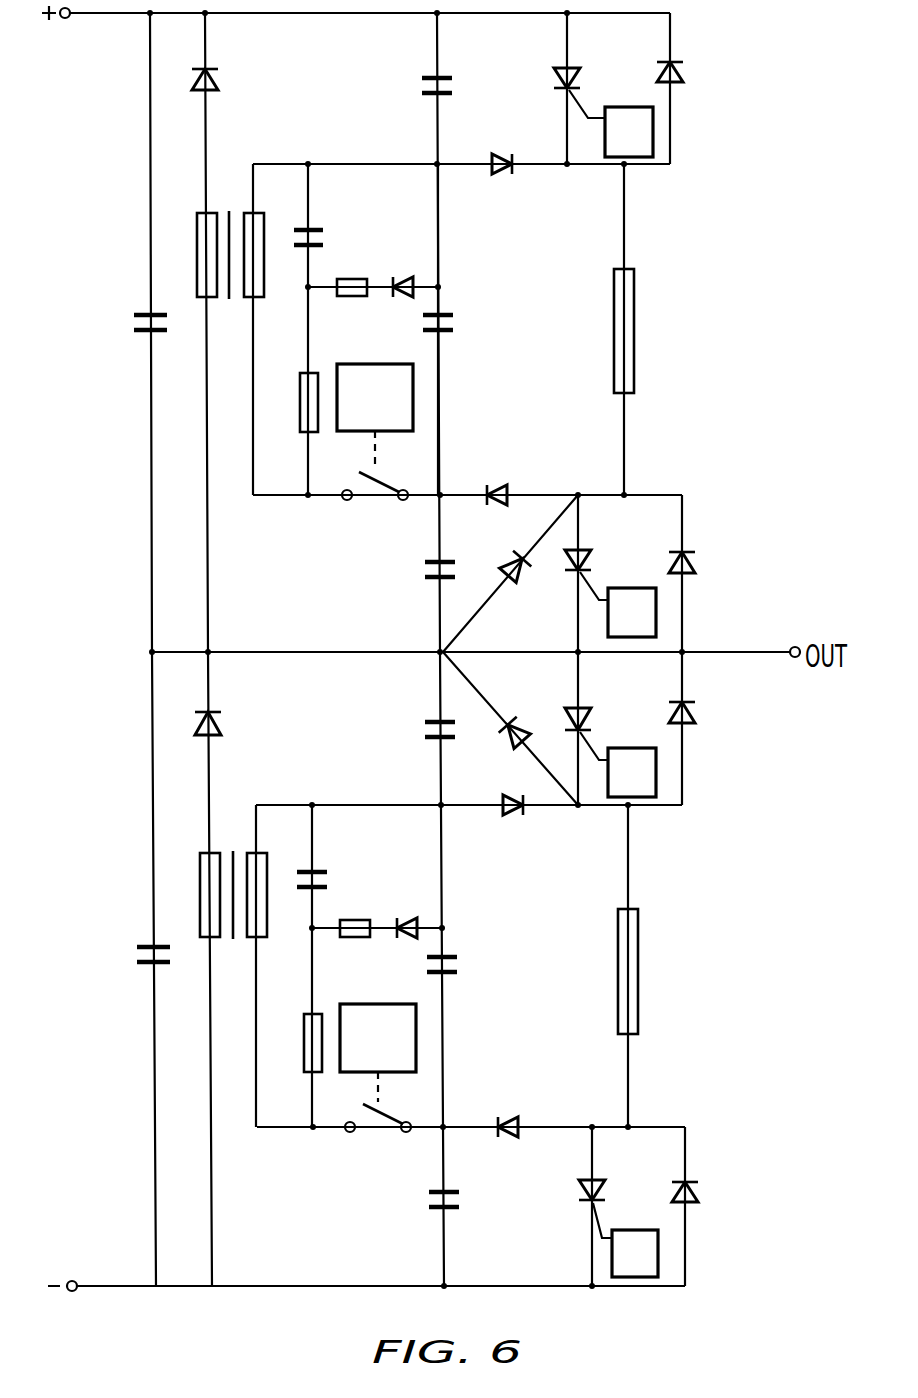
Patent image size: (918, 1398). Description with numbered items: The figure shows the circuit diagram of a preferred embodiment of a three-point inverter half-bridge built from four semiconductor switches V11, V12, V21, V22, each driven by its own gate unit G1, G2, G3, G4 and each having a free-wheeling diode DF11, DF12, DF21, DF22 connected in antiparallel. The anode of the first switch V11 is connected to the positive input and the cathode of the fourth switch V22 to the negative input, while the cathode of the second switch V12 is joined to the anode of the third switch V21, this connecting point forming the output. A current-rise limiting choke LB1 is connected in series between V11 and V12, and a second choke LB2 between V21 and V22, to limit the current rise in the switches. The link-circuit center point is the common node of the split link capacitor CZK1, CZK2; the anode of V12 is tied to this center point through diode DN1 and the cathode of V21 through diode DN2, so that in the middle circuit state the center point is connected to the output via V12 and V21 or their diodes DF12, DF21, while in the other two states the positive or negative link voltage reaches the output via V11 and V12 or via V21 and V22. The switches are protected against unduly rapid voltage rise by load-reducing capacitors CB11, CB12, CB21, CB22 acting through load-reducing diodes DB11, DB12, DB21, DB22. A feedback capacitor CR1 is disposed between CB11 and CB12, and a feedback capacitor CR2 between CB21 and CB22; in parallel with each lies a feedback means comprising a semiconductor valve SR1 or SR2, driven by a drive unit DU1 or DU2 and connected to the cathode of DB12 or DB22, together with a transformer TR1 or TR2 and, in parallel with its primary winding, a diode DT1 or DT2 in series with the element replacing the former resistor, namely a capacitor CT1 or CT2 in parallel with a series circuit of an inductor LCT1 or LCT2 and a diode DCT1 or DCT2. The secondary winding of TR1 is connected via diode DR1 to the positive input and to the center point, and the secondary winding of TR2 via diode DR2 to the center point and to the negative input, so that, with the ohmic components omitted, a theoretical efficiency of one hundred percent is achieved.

The diode DR1 is at (232, 88).
The diode DR2 is at (231, 725).
The split link capacitor CZK1 is at (122, 327).
The split link capacitor CZK2 is at (123, 966).
The transformer TR1 is at (212, 257).
The transformer TR2 is at (215, 895).
The capacitor CT1 is at (297, 265).
The capacitor CT2 is at (299, 891).
The inductor LCT1 is at (366, 312).
The inductor LCT2 is at (355, 953).
The diode DCT1 is at (395, 268).
The diode DCT2 is at (395, 909).
The feedback capacitor CR1 is at (465, 327).
The feedback capacitor CR2 is at (465, 967).
The load-reducing capacitor CB11 is at (403, 70).
The load-reducing capacitor CB12 is at (407, 571).
The load-reducing capacitor CB21 is at (408, 729).
The load-reducing capacitor CB22 is at (410, 1199).
The load-reducing diode DB11 is at (512, 188).
The load-reducing diode DB12 is at (497, 475).
The load-reducing diode DB21 is at (526, 826).
The load-reducing diode DB22 is at (507, 1107).
The diode DT1 is at (291, 410).
The diode DT2 is at (293, 1052).
The drive unit DU1 is at (375, 417).
The drive unit DU2 is at (378, 1053).
The semiconductor valve SR1 is at (375, 509).
The semiconductor valve SR2 is at (378, 1141).
The first semiconductor switch V11 is at (589, 73).
The second semiconductor switch V12 is at (605, 559).
The third semiconductor switch V21 is at (602, 715).
The fourth semiconductor switch V22 is at (616, 1186).
The gate unit G1 is at (629, 132).
The gate unit G2 is at (632, 612).
The gate unit G3 is at (632, 772).
The gate unit G4 is at (635, 1253).
The free-wheeling diode DF11 is at (704, 77).
The free-wheeling diode DF12 is at (716, 564).
The free-wheeling diode DF21 is at (716, 714).
The free-wheeling diode DF22 is at (715, 1199).
The current-rise limiting choke LB1 is at (649, 331).
The current-rise limiting choke LB2 is at (653, 971).
The diode DN1 is at (523, 590).
The diode DN2 is at (524, 712).